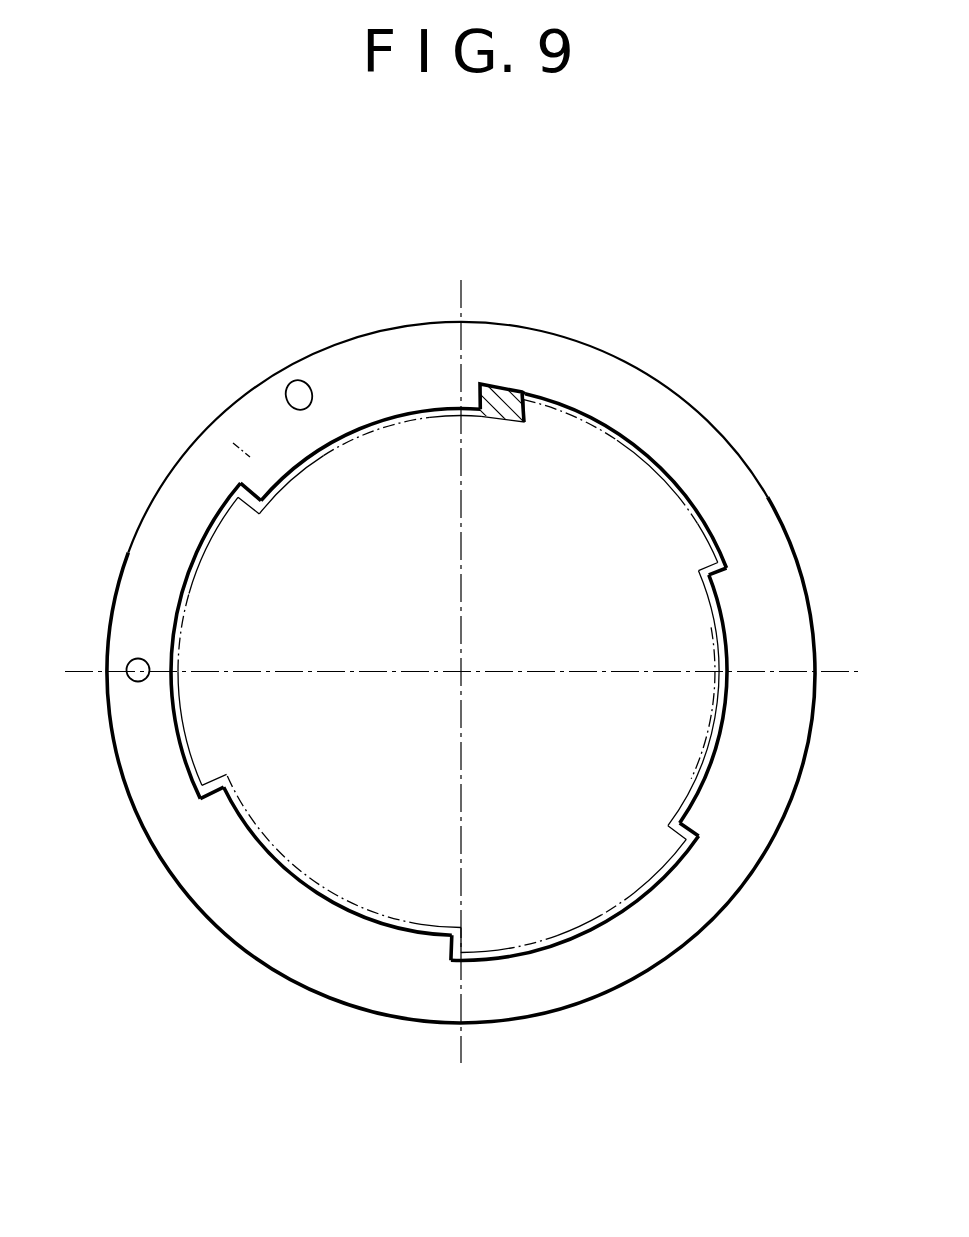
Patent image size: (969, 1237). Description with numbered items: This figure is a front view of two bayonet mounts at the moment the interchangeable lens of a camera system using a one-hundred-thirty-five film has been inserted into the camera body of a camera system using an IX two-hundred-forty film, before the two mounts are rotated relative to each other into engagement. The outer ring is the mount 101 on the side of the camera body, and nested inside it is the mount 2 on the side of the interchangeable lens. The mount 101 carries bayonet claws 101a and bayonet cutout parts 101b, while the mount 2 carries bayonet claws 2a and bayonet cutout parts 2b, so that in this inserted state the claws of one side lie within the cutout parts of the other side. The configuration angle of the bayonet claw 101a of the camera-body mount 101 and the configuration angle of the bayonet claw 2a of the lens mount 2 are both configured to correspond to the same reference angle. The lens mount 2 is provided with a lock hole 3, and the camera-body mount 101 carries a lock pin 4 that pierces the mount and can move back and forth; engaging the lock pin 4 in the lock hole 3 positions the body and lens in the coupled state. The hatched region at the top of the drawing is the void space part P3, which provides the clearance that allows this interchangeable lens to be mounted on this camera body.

The mount 2 is at (292, 502).
The bayonet claws 2a is at (703, 527).
The bayonet cutout parts 2b is at (434, 410).
The lock hole 3 is at (289, 380).
The lock pin 4 is at (127, 666).
The mount 101 is at (627, 395).
The bayonet claws 101a is at (377, 417).
The bayonet cutout parts 101b is at (188, 567).
The void space part P3 is at (507, 393).